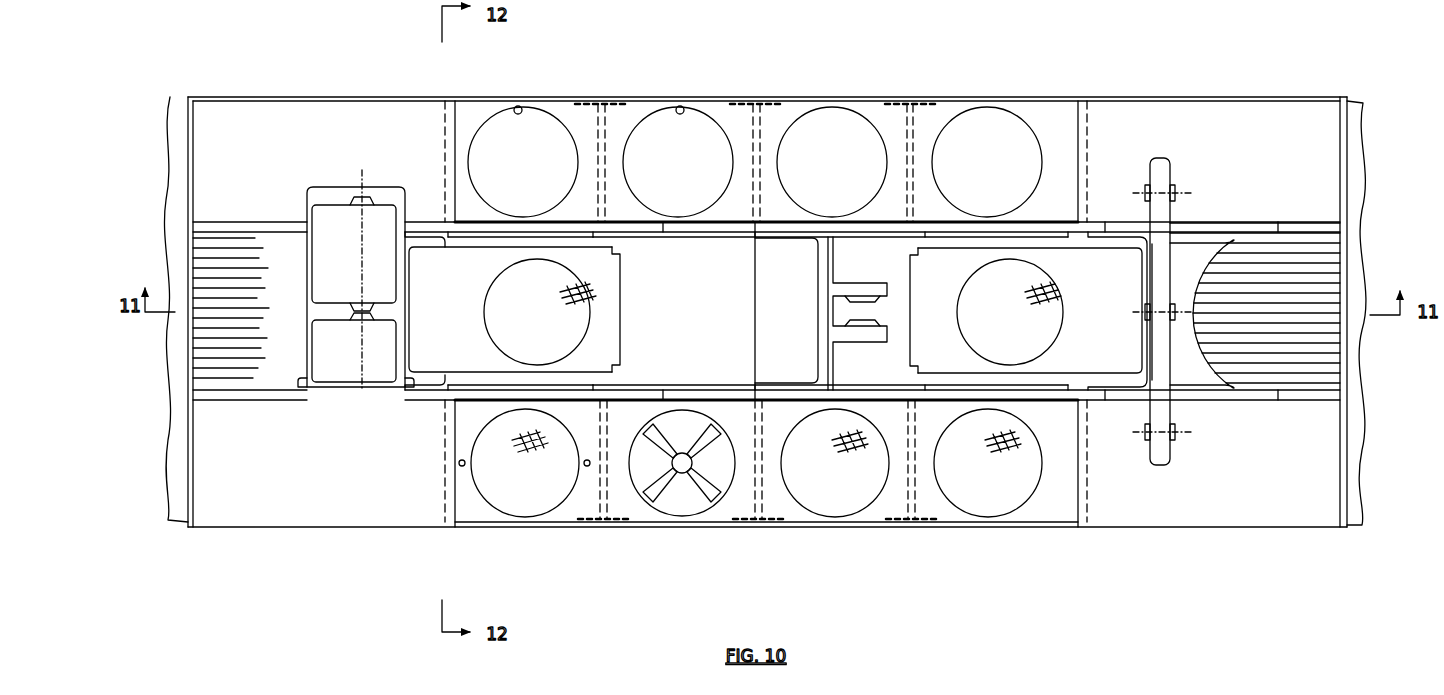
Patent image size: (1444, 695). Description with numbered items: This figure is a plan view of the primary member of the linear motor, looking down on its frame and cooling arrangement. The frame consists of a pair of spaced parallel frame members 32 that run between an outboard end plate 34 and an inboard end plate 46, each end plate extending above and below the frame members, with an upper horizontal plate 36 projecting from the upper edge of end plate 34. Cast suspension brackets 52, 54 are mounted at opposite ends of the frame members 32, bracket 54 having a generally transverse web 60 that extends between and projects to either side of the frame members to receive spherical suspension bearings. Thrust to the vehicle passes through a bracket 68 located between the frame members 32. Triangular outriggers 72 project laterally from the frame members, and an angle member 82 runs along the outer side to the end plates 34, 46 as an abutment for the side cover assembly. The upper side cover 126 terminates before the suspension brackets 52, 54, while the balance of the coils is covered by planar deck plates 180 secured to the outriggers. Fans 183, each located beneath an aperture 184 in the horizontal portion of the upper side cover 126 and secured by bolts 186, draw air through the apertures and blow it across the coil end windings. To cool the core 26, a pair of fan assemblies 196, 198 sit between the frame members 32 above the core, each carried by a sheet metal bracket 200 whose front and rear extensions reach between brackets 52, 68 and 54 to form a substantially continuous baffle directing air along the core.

The core 26 is at (1330, 283).
The frame members 32 is at (665, 232).
The outboard end plate 34 is at (190, 485).
The upper horizontal plate 36 is at (183, 458).
The inboard end plate 46 is at (1348, 500).
The suspension bracket 52 is at (315, 185).
The suspension bracket 54 is at (1178, 212).
The transverse web 60 is at (1166, 160).
The thrust bracket 68 is at (812, 247).
The outriggers 72 is at (595, 105).
The angle member 82 is at (800, 100).
The upper side cover 126 is at (583, 505).
The deck plates 180 is at (805, 308).
The fans 183 is at (668, 492).
The apertures 184 is at (518, 107).
The bolts 186 is at (462, 458).
The fan assembly 196 is at (612, 308).
The fan assembly 198 is at (922, 265).
The sheet metal bracket 200 is at (628, 356).